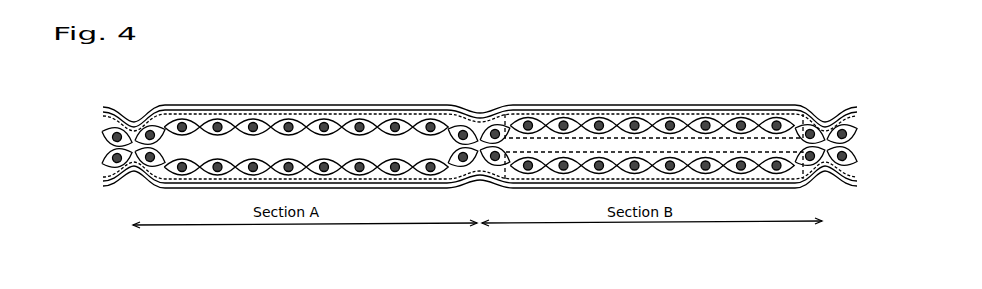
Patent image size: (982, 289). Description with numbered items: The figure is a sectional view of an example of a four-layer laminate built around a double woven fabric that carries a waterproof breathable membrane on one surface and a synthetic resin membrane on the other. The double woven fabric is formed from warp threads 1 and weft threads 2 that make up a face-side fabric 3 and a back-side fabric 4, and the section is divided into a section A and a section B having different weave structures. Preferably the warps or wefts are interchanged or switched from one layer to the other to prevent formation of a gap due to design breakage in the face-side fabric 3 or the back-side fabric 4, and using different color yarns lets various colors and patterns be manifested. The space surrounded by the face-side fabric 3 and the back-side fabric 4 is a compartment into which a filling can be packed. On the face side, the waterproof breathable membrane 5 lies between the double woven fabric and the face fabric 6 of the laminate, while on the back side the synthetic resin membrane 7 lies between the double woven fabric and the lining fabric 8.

The warp threads of the double woven fabric 1 is at (262, 104).
The weft threads of the double woven fabric 2 is at (299, 108).
The face-side fabric of the double woven fabric 3 is at (584, 112).
The back-side fabric of the double woven fabric 4 is at (618, 108).
The waterproof breathable membrane 5 is at (337, 110).
The face fabric of the four-layer laminate 6 is at (368, 112).
The synthetic resin membrane 7 is at (354, 192).
The lining fabric of the four-layer laminate 8 is at (389, 191).